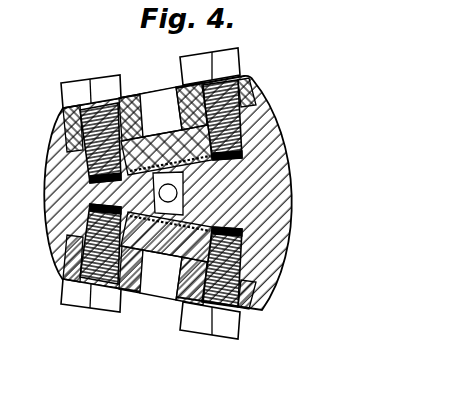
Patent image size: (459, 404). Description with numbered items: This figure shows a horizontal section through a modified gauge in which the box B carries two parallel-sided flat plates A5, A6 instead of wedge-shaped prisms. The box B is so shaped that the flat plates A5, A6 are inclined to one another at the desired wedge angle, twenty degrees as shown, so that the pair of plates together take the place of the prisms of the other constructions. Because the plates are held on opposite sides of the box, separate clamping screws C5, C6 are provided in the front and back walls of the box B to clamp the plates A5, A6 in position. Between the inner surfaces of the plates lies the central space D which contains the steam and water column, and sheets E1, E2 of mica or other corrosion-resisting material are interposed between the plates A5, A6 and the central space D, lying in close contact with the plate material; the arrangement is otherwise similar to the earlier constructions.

The box B is at (68, 183).
The clamping screw C5 is at (294, 84).
The clamping screw C6 is at (294, 330).
The parallel-sided flat plate A5 is at (165, 142).
The parallel-sided flat plate A6 is at (155, 240).
The sheet of mica or other corrosion-resisting material E1 is at (200, 170).
The sheet of mica or other corrosion-resisting material E2 is at (170, 248).
The central space D is at (183, 211).